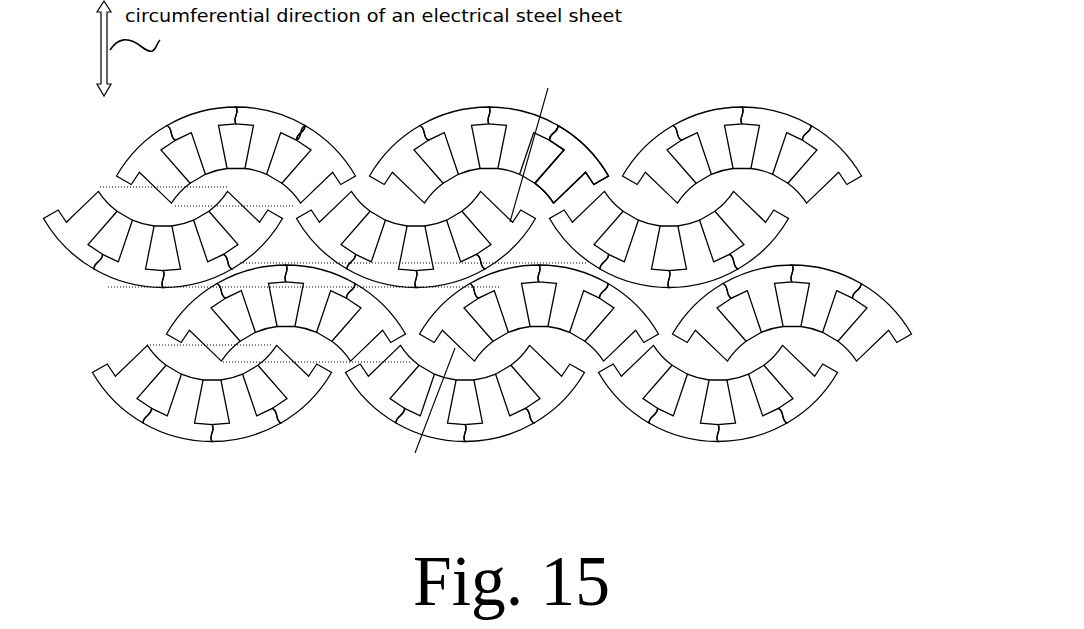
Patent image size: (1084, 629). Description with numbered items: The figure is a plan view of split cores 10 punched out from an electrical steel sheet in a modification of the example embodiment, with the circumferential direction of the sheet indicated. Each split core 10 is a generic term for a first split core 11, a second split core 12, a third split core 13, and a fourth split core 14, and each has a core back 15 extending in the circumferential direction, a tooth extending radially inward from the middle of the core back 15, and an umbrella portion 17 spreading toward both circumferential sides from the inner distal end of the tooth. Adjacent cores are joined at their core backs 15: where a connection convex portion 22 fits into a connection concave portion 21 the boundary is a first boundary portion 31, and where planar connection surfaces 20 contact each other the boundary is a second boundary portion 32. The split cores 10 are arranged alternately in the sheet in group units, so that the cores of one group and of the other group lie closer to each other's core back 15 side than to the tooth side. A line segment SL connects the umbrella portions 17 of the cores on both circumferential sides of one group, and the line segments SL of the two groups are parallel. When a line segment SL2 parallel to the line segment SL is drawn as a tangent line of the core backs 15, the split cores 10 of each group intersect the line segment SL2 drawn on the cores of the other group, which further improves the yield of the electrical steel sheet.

The split core 10 is at (247, 281).
The first split core 11 is at (158, 133).
The second split core 12 is at (232, 107).
The third split core 13 is at (290, 118).
The fourth split core 14 is at (335, 143).
The core back 15 is at (568, 150).
The umbrella portion 17 is at (555, 197).
The connection surface 20 is at (485, 133).
The connection concave portion 21 is at (368, 82).
The connection convex portion 22 is at (368, 82).
The first boundary portion 31 is at (305, 142).
The second boundary portion 32 is at (362, 172).
The line segment SL is at (112, 188).
The line segment SL2 is at (478, 276).